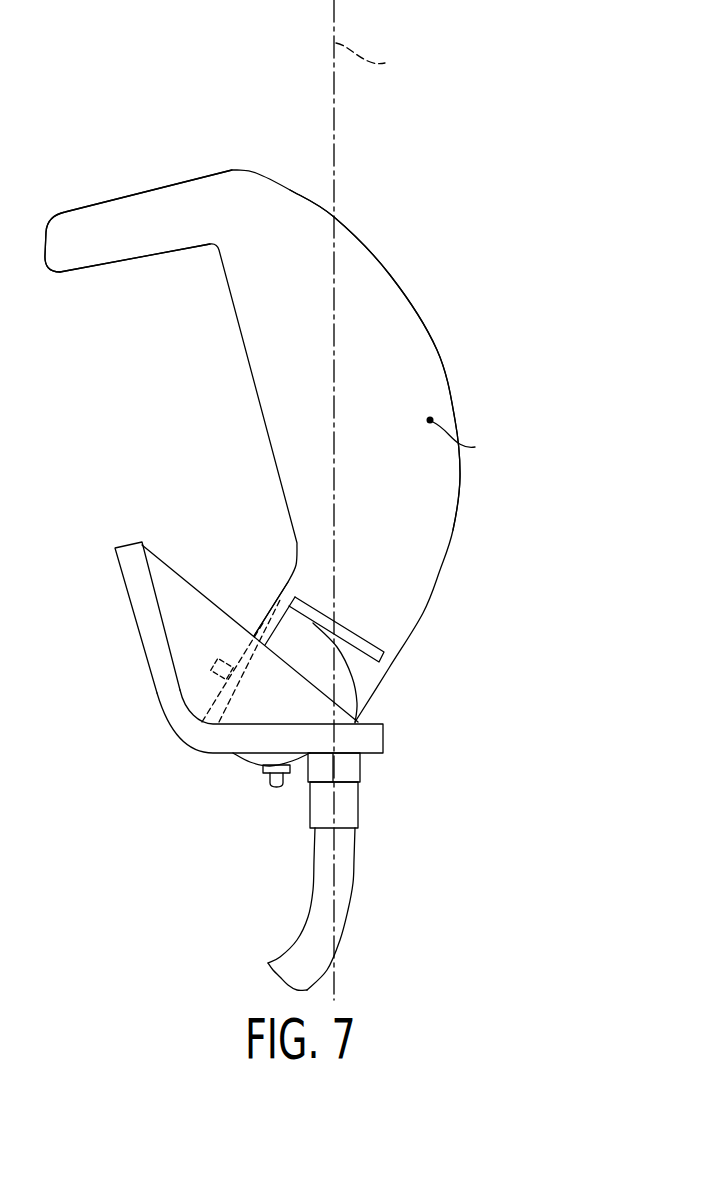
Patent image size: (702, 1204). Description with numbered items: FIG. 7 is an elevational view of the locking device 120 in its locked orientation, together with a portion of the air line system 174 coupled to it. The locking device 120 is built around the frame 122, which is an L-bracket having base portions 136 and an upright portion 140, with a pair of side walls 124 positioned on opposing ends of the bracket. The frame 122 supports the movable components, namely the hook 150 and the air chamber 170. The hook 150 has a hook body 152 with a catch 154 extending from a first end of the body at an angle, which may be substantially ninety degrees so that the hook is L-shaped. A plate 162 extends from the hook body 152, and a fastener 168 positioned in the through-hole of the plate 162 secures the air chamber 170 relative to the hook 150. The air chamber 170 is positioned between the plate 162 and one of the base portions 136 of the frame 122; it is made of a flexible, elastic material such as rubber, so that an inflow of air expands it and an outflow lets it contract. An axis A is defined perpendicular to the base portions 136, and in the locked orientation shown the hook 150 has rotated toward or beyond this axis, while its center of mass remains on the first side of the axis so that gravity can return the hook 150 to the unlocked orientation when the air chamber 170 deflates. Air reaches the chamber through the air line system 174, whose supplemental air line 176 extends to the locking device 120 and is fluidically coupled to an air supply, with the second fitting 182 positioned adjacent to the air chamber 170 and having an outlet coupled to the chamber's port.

The locking device 120 is at (507, 237).
The frame 122 is at (168, 700).
The side walls 124 is at (172, 590).
The base portions 136 is at (213, 740).
The upright portion 140 is at (140, 575).
The hook 150 is at (435, 462).
The hook body 152 is at (423, 382).
The catch 154 is at (113, 213).
The plate 162 is at (265, 625).
The fastener 168 is at (384, 655).
The air chamber 170 is at (353, 683).
The air line system 174 is at (370, 881).
The supplemental air line 176 is at (315, 948).
The second fitting 182 is at (348, 805).